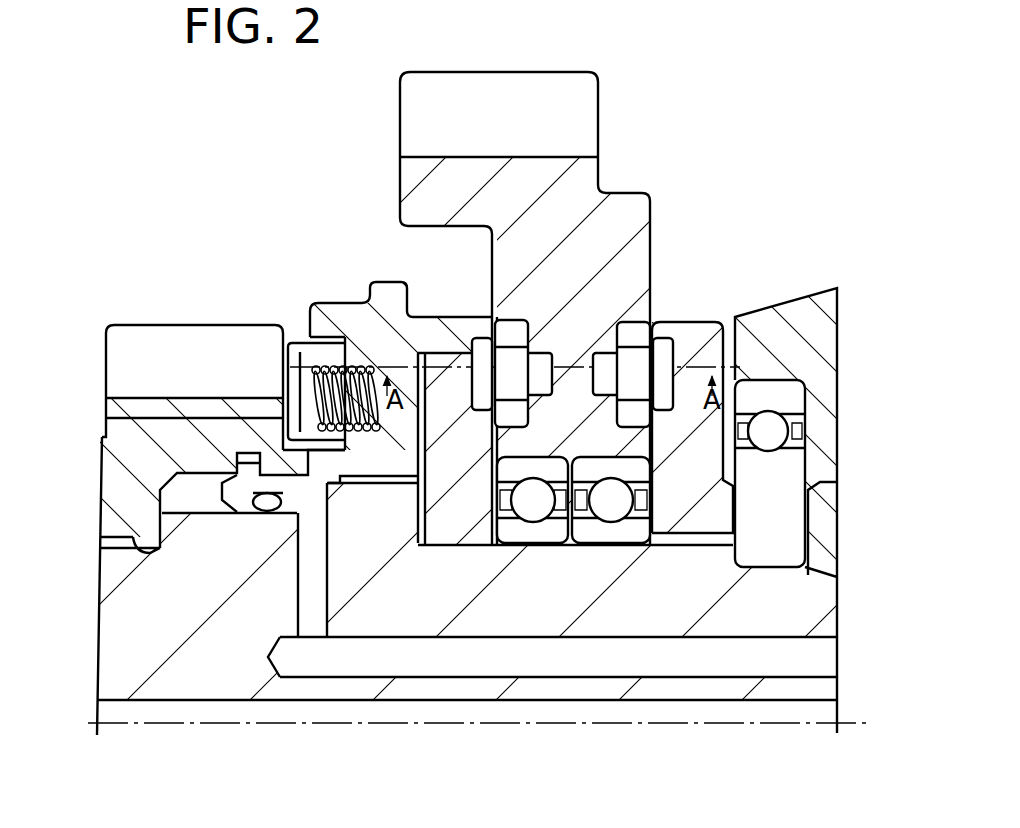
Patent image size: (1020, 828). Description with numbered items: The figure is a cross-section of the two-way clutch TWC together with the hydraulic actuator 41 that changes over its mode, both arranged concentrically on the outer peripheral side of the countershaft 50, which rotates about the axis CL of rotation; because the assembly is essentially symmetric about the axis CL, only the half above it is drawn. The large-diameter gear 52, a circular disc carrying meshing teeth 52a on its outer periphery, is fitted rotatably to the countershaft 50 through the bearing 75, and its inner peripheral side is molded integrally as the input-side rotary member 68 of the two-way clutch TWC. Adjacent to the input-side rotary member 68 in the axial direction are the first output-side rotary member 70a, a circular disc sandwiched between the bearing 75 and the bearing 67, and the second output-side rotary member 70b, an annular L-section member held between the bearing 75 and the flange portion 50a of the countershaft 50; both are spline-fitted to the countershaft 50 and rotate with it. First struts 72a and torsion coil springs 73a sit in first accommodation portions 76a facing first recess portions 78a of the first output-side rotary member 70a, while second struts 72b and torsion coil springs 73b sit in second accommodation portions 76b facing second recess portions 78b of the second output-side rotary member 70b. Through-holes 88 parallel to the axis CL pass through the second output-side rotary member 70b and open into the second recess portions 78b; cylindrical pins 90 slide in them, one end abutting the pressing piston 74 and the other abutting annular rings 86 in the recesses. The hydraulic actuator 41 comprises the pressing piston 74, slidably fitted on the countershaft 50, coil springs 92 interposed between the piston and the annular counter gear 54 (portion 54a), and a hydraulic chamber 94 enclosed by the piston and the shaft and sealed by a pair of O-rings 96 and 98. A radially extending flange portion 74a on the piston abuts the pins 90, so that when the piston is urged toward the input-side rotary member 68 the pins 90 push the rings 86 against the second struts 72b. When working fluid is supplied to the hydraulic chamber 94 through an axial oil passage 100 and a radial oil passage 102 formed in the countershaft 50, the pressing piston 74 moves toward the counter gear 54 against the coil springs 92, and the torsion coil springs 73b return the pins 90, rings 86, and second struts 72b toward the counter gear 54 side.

The hydraulic actuator 41 is at (293, 450).
The countershaft 50 is at (90, 640).
The flange portion 50a is at (368, 520).
The large-diameter gear 52 is at (380, 162).
The meshing teeth 52a is at (452, 90).
The counter gear 54 is at (100, 365).
The cover surface 54a is at (178, 334).
The bearing 67 is at (770, 506).
The input-side rotary member 68 is at (672, 257).
The first output-side rotary member 70a is at (696, 548).
The second output-side rotary member 70b is at (468, 548).
The first struts 72a is at (630, 405).
The second struts 72b is at (505, 318).
The torsion coil springs 73a is at (735, 357).
The torsion coil springs 73b is at (608, 350).
The pressing piston 74 is at (106, 420).
The flange portion 74a is at (400, 340).
The bearing 75 is at (572, 552).
The first accommodation portions 76a is at (632, 332).
The second accommodation portions 76b is at (526, 548).
The first recess portions 78a is at (690, 340).
The second recess portions 78b is at (448, 548).
The annular rings 86 is at (510, 342).
The through-holes 88 is at (433, 372).
The pins 90 is at (440, 315).
The coil springs 92 is at (313, 368).
The hydraulic chamber 94 is at (372, 503).
The O-ring 96 is at (266, 512).
The O-ring 98 is at (340, 490).
The axial oil passage 100 is at (810, 638).
The radial oil passage 102 is at (305, 585).
The two-way clutch TWC is at (561, 315).
The axis of rotation CL is at (122, 725).